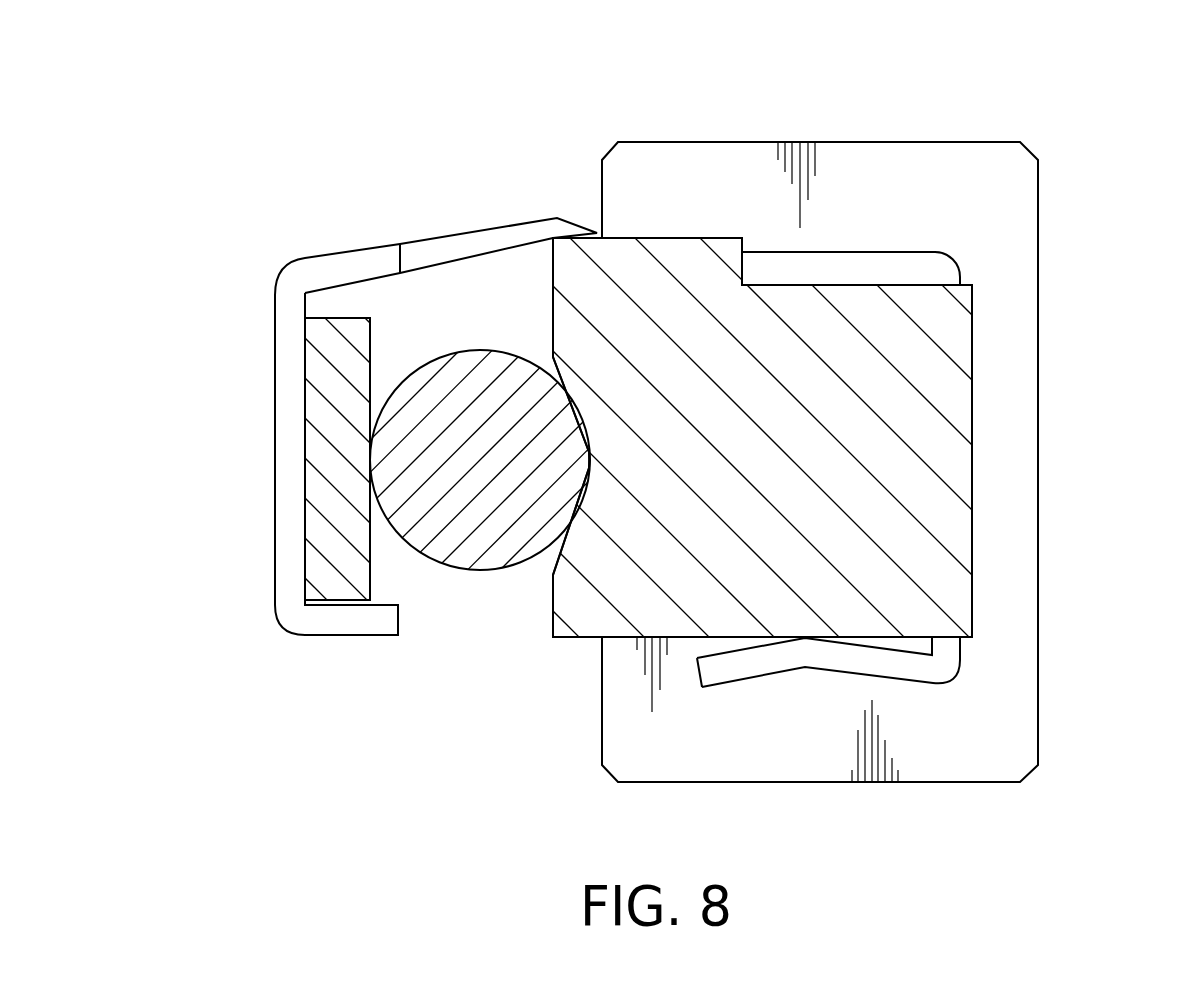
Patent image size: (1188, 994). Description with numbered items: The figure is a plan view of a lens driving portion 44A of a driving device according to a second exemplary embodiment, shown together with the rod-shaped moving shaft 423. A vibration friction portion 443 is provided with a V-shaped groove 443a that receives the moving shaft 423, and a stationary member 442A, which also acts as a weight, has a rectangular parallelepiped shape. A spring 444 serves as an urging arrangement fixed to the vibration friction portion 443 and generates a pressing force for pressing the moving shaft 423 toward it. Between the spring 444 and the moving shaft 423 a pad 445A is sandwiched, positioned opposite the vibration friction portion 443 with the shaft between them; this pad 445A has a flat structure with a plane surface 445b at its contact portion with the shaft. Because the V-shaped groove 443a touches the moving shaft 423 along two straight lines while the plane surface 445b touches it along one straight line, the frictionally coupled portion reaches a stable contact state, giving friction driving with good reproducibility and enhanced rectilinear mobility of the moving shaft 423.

The lens driving portion 44A is at (636, 84).
The stationary member 442A is at (1005, 193).
The vibration friction portion 443 is at (948, 430).
The V-shaped groove 443a is at (583, 540).
The spring 444 is at (457, 245).
The pad 445A is at (318, 507).
The plane surface 445b is at (362, 358).
The rod-shaped moving shaft 423 is at (447, 547).